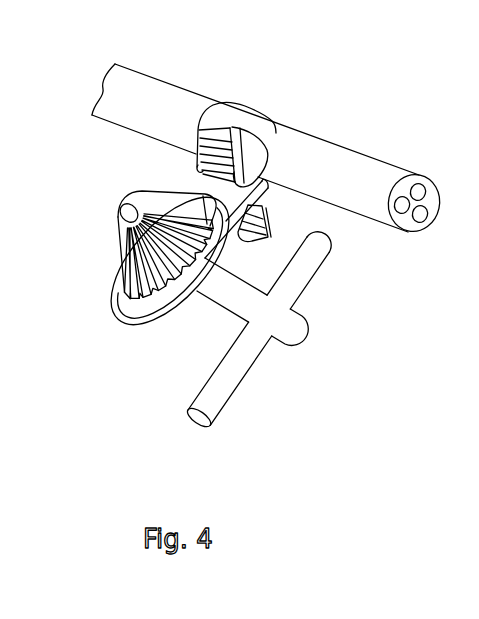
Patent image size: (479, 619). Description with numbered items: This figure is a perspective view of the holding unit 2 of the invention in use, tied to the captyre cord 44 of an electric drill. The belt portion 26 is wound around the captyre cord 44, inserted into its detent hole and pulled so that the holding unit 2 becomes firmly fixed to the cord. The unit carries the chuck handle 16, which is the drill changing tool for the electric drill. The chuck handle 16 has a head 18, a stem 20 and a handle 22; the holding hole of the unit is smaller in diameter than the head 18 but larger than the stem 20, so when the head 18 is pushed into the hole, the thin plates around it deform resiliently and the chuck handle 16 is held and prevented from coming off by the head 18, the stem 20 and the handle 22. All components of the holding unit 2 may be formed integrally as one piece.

The holding unit 2 is at (161, 176).
The chuck handle 16 is at (308, 303).
The head 18 is at (130, 257).
The stem 20 is at (230, 309).
The handle 22 is at (240, 369).
The belt portion 26 is at (250, 116).
The captyre cord 44 is at (185, 98).